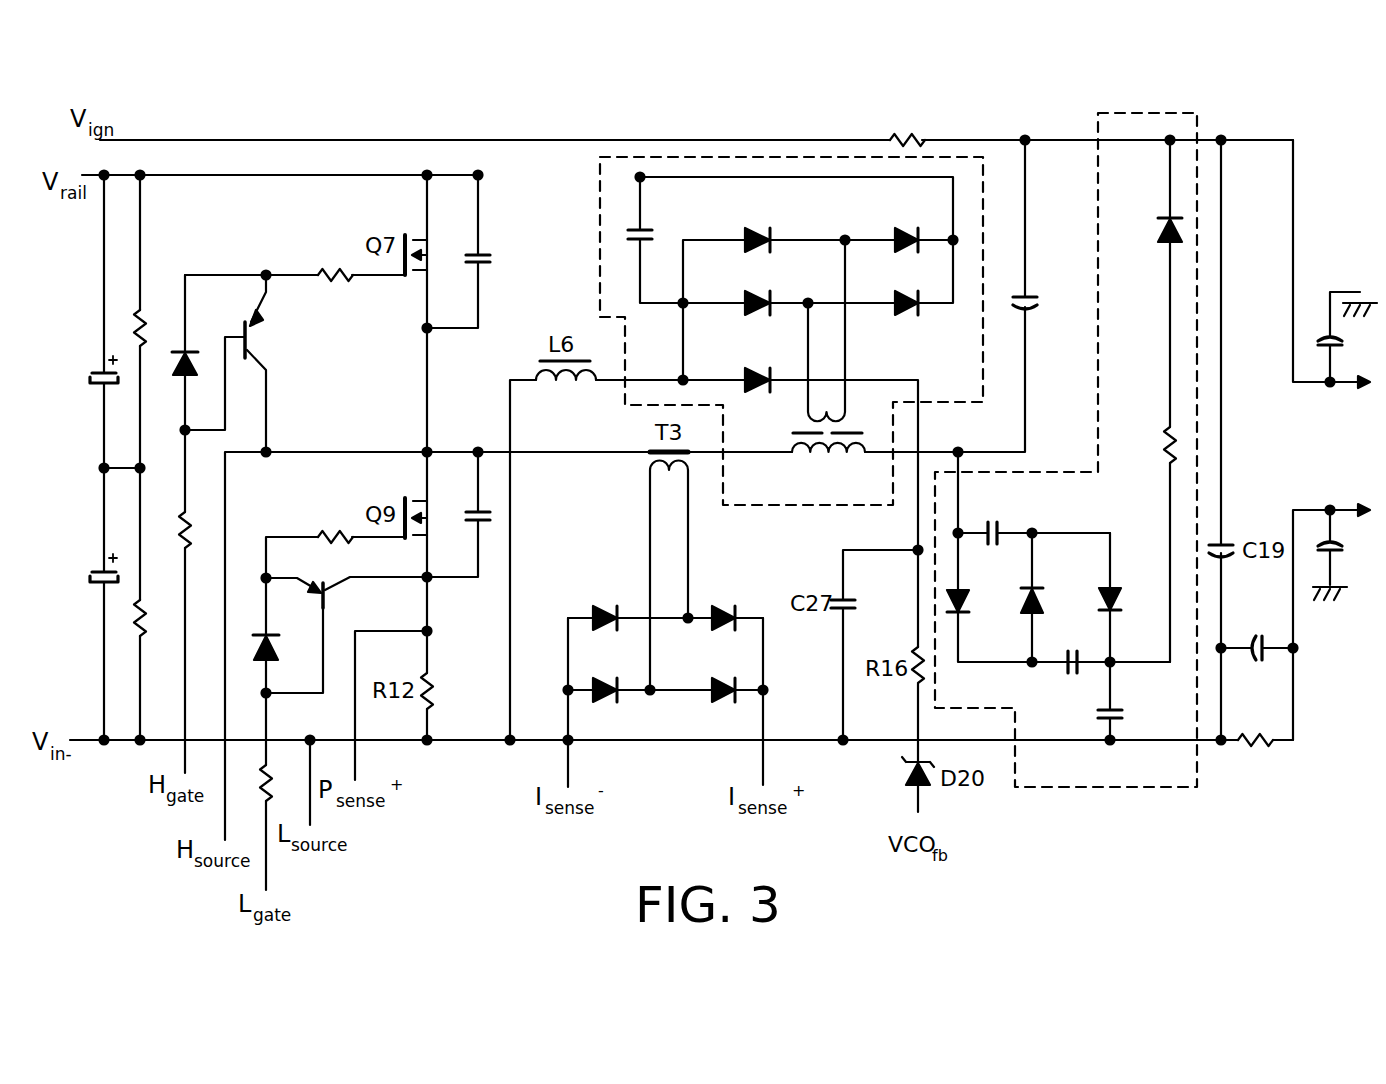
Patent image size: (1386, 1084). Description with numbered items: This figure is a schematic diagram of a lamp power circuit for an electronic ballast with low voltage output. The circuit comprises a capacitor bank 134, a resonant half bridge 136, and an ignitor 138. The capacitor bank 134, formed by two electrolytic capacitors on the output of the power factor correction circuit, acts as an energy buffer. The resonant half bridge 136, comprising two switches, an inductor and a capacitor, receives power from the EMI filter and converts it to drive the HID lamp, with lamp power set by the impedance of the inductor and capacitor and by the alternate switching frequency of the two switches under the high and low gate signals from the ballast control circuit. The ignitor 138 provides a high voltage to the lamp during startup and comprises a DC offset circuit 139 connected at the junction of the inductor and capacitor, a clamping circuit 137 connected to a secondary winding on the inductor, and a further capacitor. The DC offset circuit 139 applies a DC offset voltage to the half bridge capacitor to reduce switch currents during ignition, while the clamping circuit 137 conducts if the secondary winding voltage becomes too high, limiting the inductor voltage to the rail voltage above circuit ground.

The capacitor bank 134 is at (92, 458).
The resonant half bridge 136 is at (462, 116).
The clamping circuit 137 is at (600, 220).
The ignitor 138 is at (983, 114).
The DC offset circuit 139 is at (1165, 113).